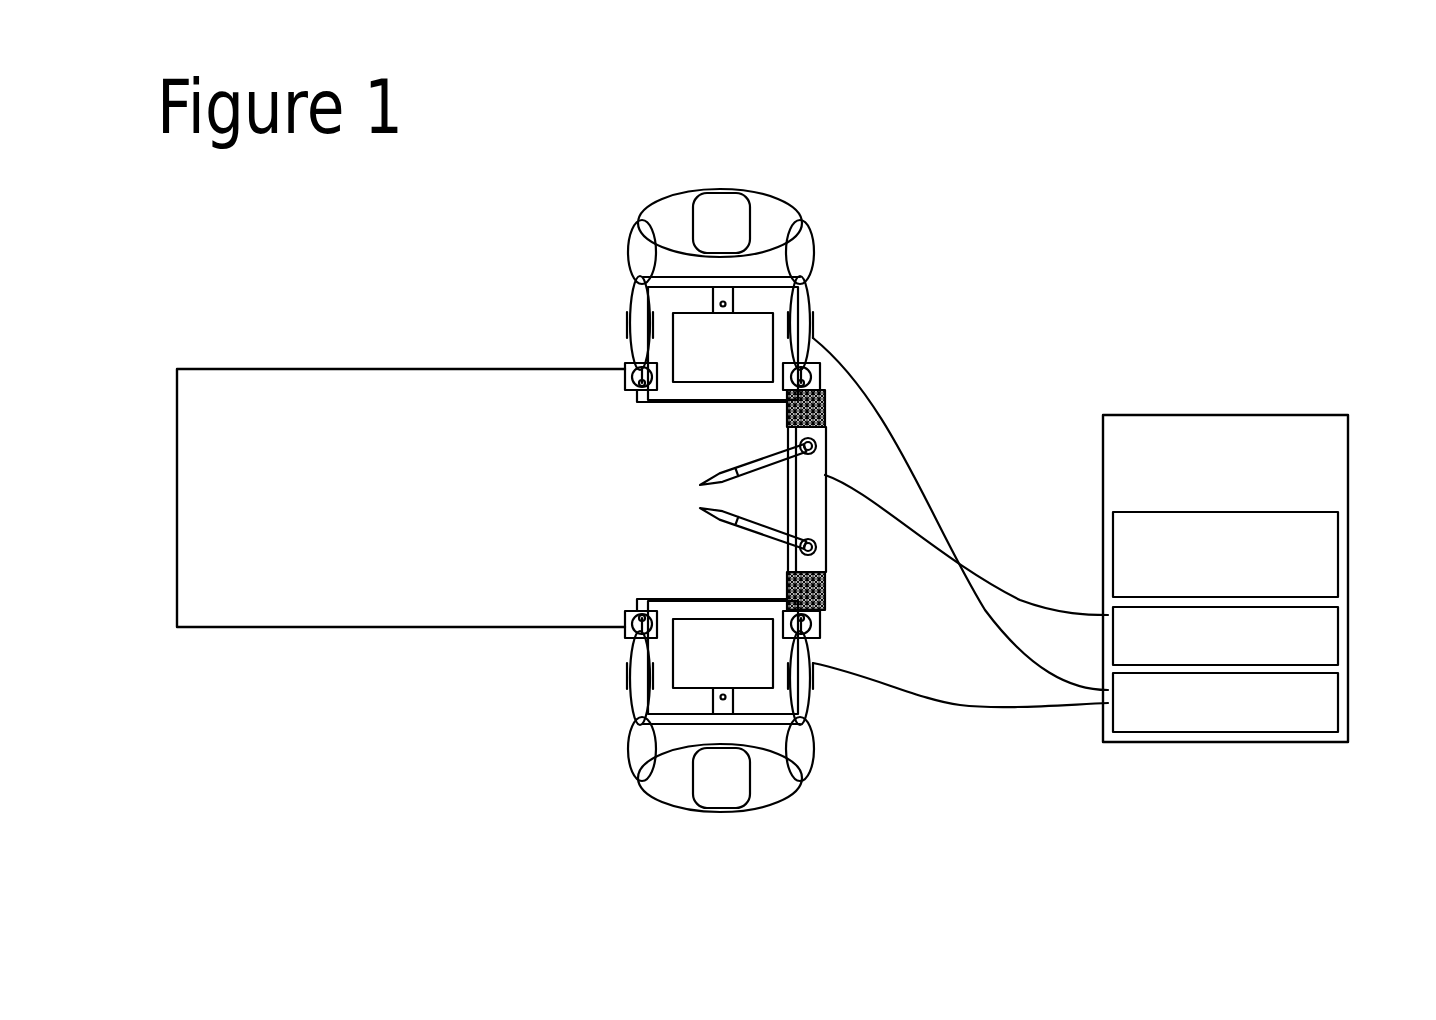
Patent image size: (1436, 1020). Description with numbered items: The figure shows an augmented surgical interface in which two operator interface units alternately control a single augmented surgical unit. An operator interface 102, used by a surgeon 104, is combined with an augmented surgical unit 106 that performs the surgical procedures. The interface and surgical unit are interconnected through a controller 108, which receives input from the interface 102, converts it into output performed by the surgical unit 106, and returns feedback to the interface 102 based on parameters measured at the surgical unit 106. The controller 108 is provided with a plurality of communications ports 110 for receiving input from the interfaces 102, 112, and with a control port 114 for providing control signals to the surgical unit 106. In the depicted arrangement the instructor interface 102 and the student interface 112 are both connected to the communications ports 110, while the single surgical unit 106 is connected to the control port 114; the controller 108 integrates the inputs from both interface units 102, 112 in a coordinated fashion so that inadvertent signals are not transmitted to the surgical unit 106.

The operator interface 102 is at (765, 720).
The surgeon 104 is at (767, 790).
The augmented surgical unit 106 is at (817, 521).
The controller 108 is at (1247, 576).
The communications ports 110 is at (1133, 715).
The student interface 112 is at (780, 282).
The control port 114 is at (1320, 633).